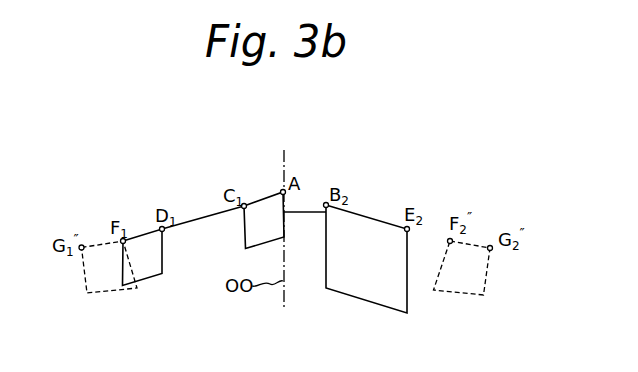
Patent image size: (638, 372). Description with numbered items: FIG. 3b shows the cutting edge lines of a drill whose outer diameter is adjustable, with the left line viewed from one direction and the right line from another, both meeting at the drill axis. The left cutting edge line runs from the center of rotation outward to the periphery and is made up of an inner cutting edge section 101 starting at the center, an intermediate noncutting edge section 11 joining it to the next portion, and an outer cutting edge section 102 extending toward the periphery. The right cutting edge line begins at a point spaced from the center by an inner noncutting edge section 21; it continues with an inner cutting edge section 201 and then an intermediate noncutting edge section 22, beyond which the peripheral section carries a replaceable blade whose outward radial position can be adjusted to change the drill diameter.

The outer cutting edge section 102 is at (141, 231).
The intermediate noncutting edge section 11 is at (206, 221).
The inner cutting edge section 101 is at (265, 198).
The inner noncutting edge section 21 is at (306, 206).
The inner cutting edge section 201 is at (370, 215).
The intermediate noncutting edge section 22 is at (430, 240).